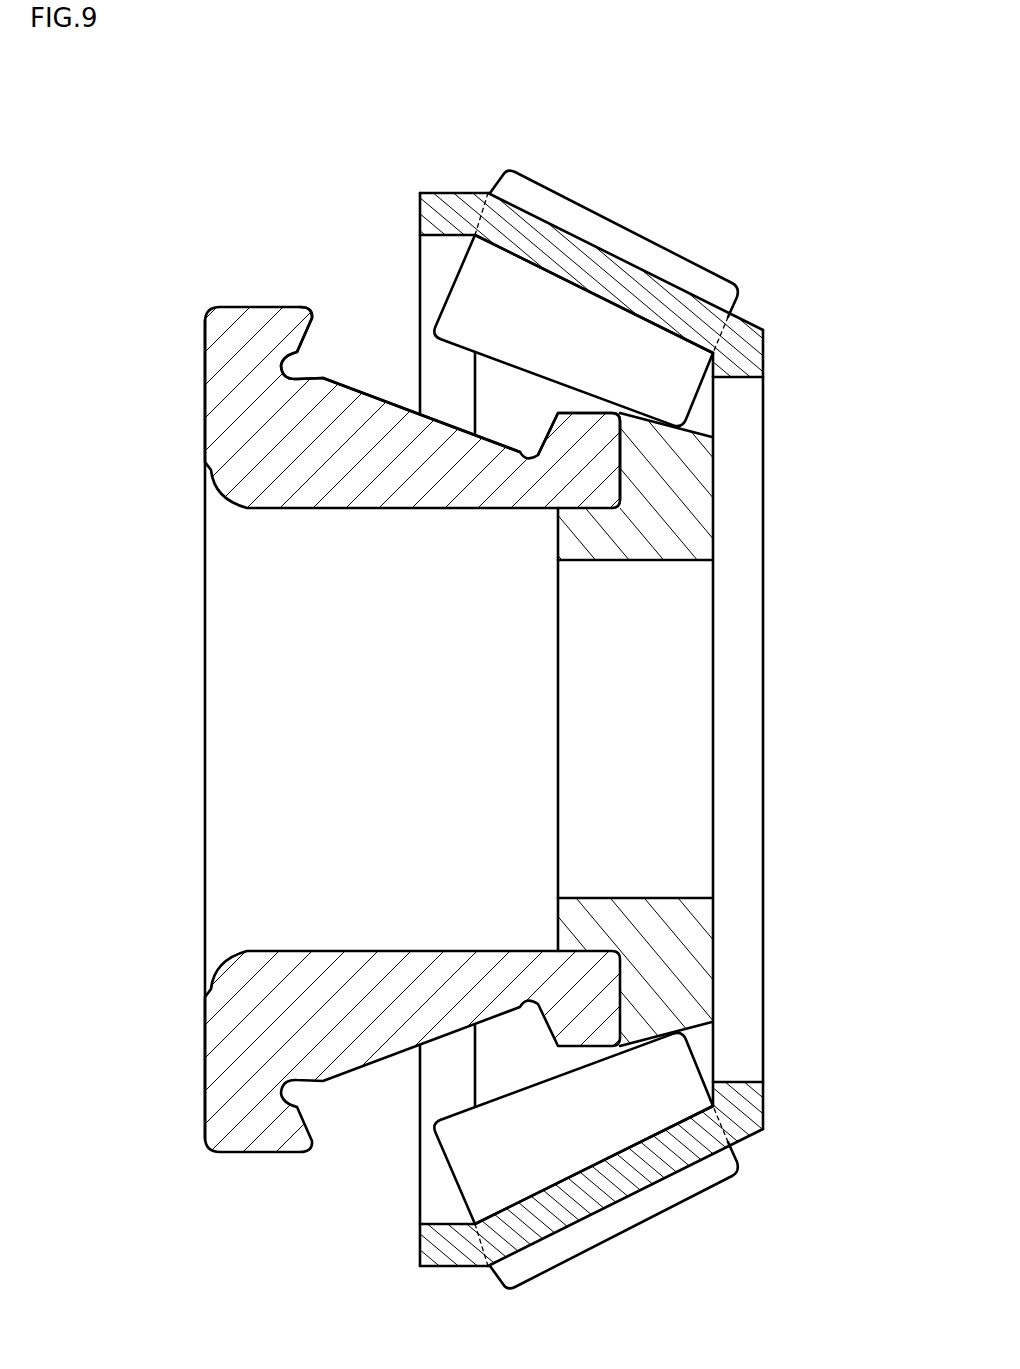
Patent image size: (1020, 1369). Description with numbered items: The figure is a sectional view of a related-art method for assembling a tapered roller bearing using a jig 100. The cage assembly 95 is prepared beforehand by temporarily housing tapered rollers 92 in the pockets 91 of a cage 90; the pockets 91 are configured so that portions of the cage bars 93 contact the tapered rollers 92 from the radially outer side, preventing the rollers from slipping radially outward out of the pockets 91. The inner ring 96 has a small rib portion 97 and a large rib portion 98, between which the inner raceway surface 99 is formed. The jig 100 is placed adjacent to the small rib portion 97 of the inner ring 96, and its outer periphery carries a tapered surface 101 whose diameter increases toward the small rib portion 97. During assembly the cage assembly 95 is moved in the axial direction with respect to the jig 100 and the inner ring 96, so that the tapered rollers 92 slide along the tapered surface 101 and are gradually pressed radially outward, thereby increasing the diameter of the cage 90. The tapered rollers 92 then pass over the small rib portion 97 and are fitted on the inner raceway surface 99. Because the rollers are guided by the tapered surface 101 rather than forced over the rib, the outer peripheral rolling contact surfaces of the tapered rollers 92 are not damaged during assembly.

The cage 90 is at (599, 701).
The pockets 91 is at (660, 280).
The tapered rollers 92 is at (612, 222).
The cage bars 93 is at (565, 250).
The cage assembly 95 is at (599, 701).
The inner ring 96 is at (411, 721).
The small rib portion 97 is at (598, 437).
The large rib portion 98 is at (232, 338).
The inner raceway surface 99 is at (350, 383).
The jig 100 is at (688, 727).
The tapered surface 101 is at (650, 420).